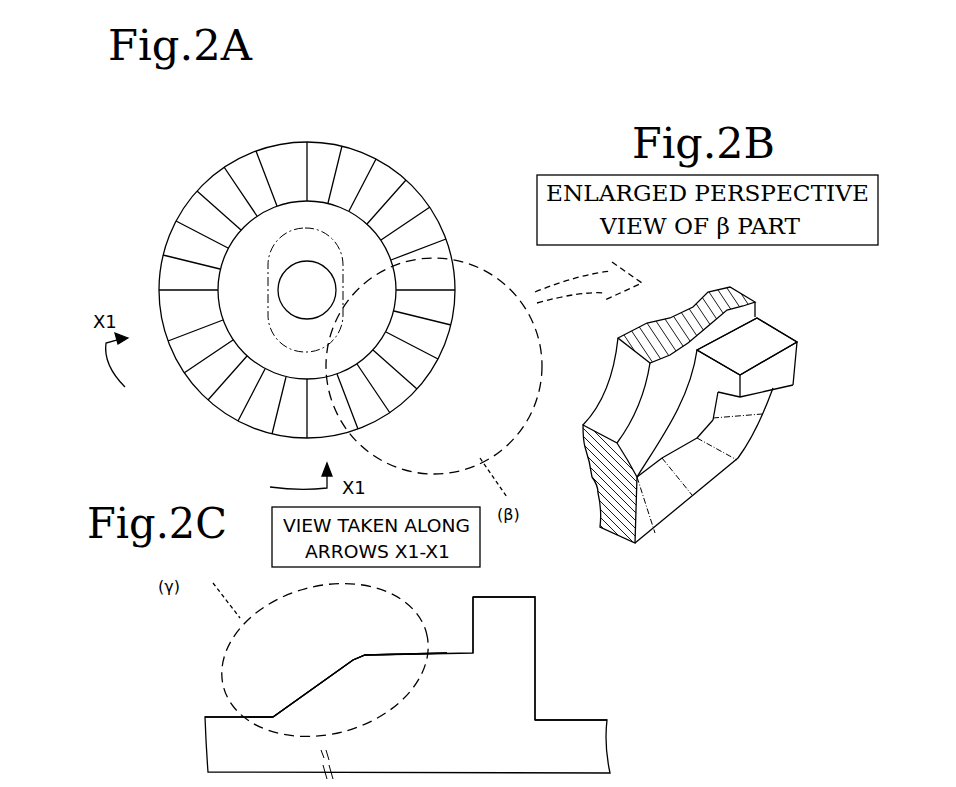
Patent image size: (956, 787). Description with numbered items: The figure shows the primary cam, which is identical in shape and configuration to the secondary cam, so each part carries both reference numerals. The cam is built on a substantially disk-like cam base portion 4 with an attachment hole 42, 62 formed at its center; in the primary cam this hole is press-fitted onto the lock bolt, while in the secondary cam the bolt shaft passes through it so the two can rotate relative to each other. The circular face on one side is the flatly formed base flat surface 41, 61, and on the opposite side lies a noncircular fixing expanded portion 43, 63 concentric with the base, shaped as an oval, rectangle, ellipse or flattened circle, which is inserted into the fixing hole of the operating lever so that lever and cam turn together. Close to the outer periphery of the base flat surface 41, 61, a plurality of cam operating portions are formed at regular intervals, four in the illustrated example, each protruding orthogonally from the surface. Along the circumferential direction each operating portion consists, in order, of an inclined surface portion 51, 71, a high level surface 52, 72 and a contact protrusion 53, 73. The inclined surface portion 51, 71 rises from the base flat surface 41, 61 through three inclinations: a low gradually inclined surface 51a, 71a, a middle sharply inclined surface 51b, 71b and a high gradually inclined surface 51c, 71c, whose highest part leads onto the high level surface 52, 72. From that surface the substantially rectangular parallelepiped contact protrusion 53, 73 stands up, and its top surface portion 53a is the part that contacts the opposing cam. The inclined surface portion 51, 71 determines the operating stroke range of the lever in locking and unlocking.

In FIG. 2C, the cam base portion 4 is at (608, 742).
In FIG. 2A, the base flat surface 41 is at (307, 259).
In FIG. 2B, the base flat surface 41 is at (693, 358).
In FIG. 2C, the base flat surface 41 is at (212, 716).
In FIG. 2A, the base flat surface 61 is at (279, 158).
In FIG. 2B, the base flat surface 61 is at (672, 364).
In FIG. 2A, the attachment hole 42 is at (283, 296).
In FIG. 2B, the attachment hole 42 is at (610, 455).
In FIG. 2A, the attachment hole 62 is at (294, 286).
In FIG. 2B, the attachment hole 62 is at (607, 392).
In FIG. 2A, the fixing expanded portion 43 is at (287, 290).
In FIG. 2A, the fixing expanded portion 63 is at (287, 290).
In FIG. 2A, the inclined surface portion 51 is at (306, 290).
In FIG. 2B, the inclined surface portion 51 is at (728, 483).
In FIG. 2C, the inclined surface portion 51 is at (370, 598).
In FIG. 2A, the inclined surface portion 71 is at (173, 141).
In FIG. 2B, the inclined surface portion 71 is at (820, 478).
In FIG. 2A, the low gradually inclined surface 51a is at (235, 146).
In FIG. 2B, the low gradually inclined surface 51a is at (691, 501).
In FIG. 2C, the low gradually inclined surface 51a is at (272, 710).
In FIG. 2B, the low gradually inclined surface 71a is at (657, 503).
In FIG. 2A, the middle sharply inclined surface 51b is at (202, 168).
In FIG. 2B, the middle sharply inclined surface 51b is at (723, 477).
In FIG. 2C, the middle sharply inclined surface 51b is at (348, 658).
In FIG. 2B, the middle sharply inclined surface 71b is at (693, 473).
In FIG. 2A, the high gradually inclined surface 51c is at (176, 197).
In FIG. 2B, the high gradually inclined surface 51c is at (756, 449).
In FIG. 2C, the high gradually inclined surface 51c is at (407, 643).
In FIG. 2B, the high gradually inclined surface 71c is at (740, 435).
In FIG. 2A, the high level surface 52 is at (305, 293).
In FIG. 2B, the high level surface 52 is at (769, 416).
In FIG. 2C, the high level surface 52 is at (448, 650).
In FIG. 2A, the high level surface 72 is at (157, 232).
In FIG. 2B, the high level surface 72 is at (745, 407).
In FIG. 2A, the contact protrusion 53 is at (307, 293).
In FIG. 2B, the contact protrusion 53 is at (765, 351).
In FIG. 2C, the contact protrusion 53 is at (505, 597).
In FIG. 2A, the contact protrusion 73 is at (147, 270).
In FIG. 2B, the contact protrusion 73 is at (788, 360).
In FIG. 2B, the top surface portion 53a is at (757, 373).